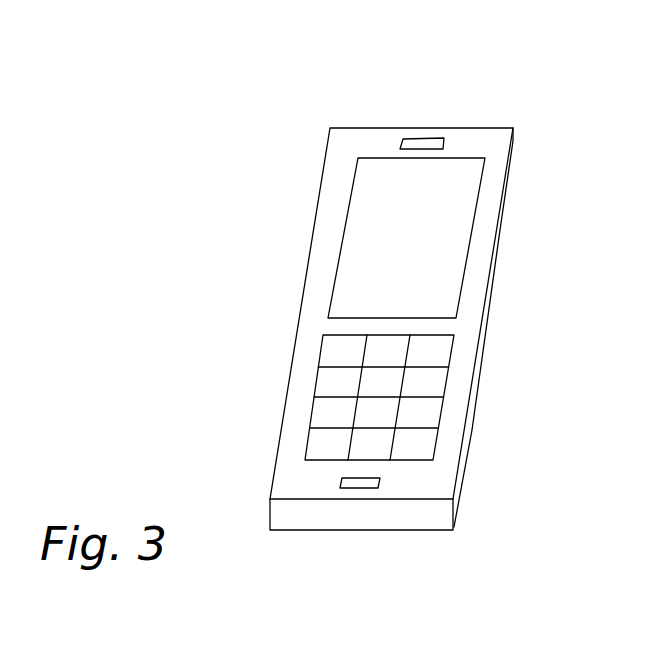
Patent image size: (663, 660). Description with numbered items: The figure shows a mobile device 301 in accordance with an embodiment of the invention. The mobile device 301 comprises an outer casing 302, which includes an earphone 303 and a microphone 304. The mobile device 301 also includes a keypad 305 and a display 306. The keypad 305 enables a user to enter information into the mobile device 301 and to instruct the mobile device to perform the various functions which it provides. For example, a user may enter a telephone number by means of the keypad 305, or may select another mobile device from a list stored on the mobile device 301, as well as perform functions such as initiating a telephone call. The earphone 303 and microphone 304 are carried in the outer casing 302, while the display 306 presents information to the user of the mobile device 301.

The mobile device 301 is at (276, 179).
The outer casing 302 is at (295, 338).
The earphone 303 is at (428, 140).
The microphone 304 is at (473, 228).
The keypad 305 is at (448, 382).
The display 306 is at (372, 488).